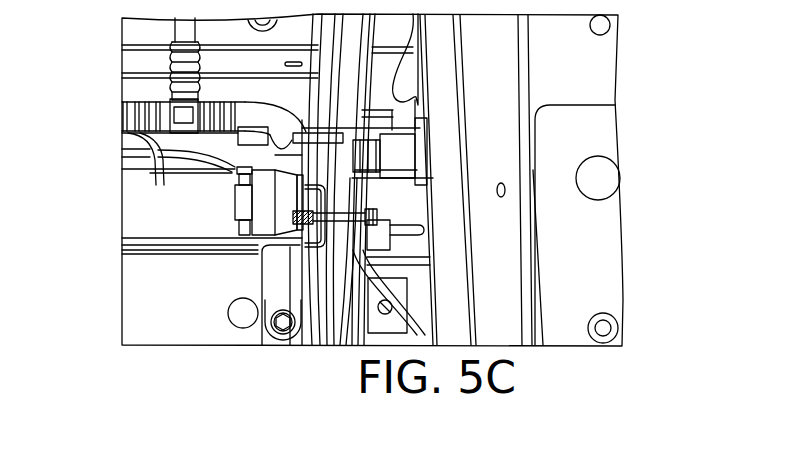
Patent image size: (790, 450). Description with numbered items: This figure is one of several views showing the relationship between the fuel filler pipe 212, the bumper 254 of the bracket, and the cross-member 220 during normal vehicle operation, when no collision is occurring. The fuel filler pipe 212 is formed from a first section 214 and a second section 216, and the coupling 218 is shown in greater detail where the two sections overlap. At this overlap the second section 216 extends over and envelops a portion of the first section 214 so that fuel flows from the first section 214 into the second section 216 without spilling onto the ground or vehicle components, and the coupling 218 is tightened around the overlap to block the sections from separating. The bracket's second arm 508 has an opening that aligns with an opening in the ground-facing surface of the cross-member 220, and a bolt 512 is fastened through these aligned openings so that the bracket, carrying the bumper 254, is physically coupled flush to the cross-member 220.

The fuel filler pipe 212 is at (119, 176).
The first section 214 is at (410, 207).
The second section 216 is at (122, 205).
The coupling 218 is at (233, 202).
The cross-member 220 is at (176, 298).
The bumper 254 is at (392, 247).
The second arm 508 is at (265, 283).
The bolt 512 is at (283, 330).